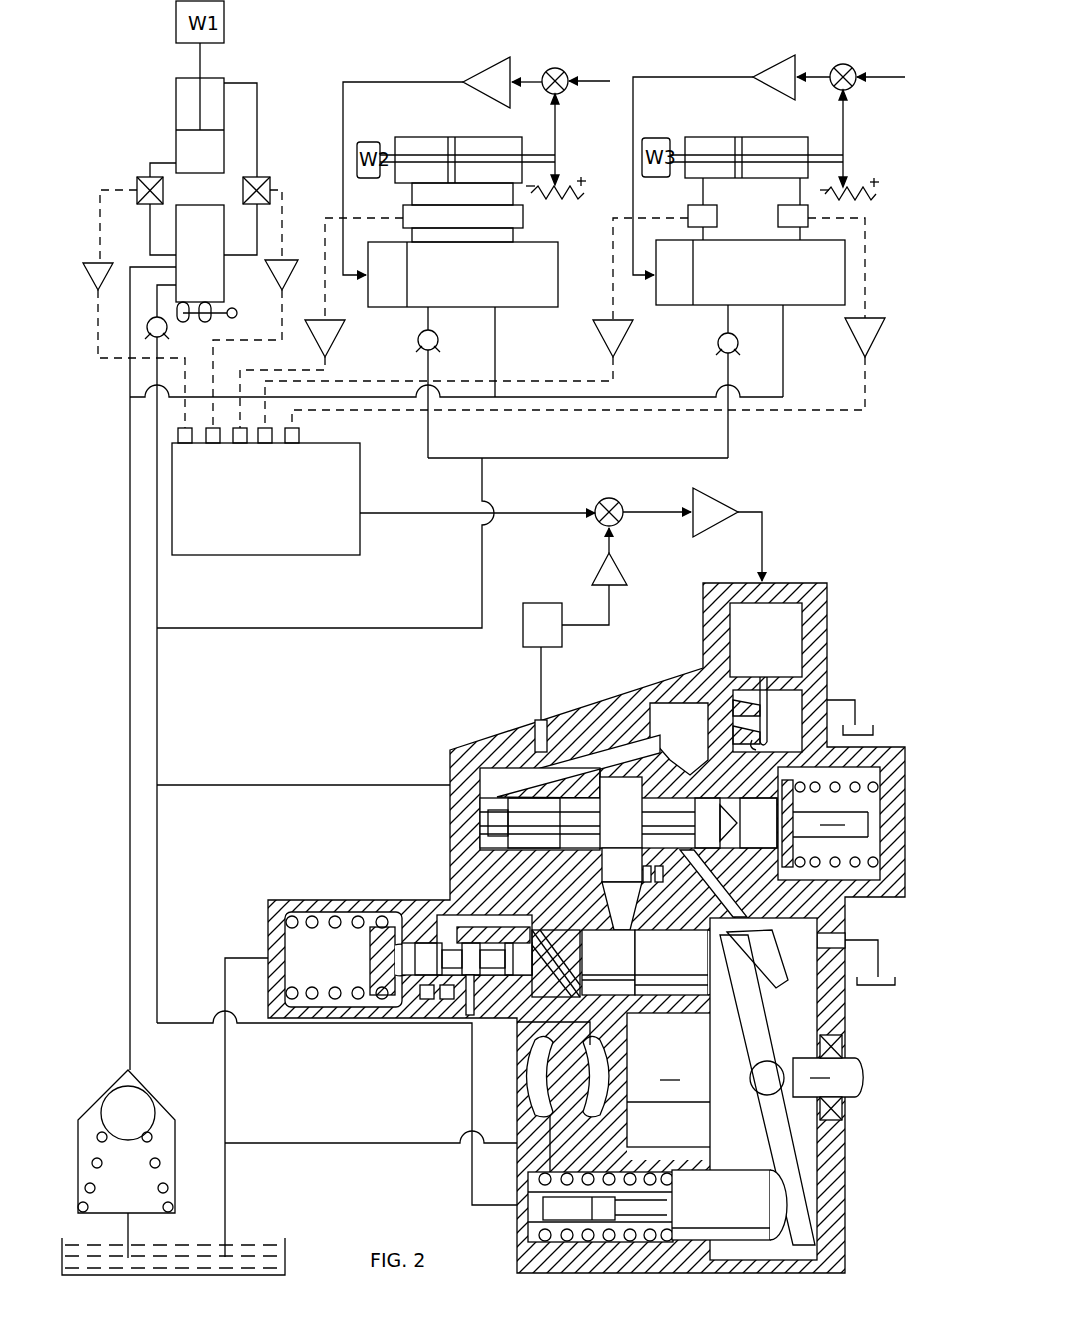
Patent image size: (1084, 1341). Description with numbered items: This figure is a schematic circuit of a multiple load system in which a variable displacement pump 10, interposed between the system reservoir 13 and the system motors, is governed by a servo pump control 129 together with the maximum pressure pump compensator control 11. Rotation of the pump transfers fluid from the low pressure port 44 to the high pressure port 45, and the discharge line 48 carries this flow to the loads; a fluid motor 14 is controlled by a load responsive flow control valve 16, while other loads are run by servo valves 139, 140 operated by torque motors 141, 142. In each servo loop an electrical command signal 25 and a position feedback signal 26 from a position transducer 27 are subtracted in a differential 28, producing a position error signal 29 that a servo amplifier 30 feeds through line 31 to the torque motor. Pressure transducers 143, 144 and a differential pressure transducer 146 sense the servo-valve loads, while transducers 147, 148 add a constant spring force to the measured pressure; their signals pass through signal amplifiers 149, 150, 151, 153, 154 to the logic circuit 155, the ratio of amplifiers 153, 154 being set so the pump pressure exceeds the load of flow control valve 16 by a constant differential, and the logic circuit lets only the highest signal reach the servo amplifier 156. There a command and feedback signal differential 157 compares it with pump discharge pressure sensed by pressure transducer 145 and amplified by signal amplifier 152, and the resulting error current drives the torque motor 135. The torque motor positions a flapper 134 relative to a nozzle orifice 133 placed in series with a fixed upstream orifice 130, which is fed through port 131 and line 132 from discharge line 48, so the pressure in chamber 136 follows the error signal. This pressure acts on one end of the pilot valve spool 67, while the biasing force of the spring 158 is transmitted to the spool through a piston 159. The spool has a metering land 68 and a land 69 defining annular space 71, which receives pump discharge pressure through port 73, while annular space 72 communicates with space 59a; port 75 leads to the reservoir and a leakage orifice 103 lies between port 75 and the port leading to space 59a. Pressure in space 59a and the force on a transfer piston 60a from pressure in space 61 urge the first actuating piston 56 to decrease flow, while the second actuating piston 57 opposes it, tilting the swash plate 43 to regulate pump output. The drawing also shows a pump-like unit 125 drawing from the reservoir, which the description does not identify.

The variable displacement pump 10 is at (836, 1186).
The maximum pressure pump compensator control 11 is at (350, 1010).
The system reservoir 13 is at (874, 728).
The fluid motor 14 is at (176, 108).
The load responsive flow control valve 16 is at (210, 270).
The electrical command signal 25 is at (592, 78).
The position feedback signal 26 is at (558, 140).
The position transducer 27 is at (570, 196).
The differential 28 is at (562, 90).
The position error signal 29 is at (526, 86).
The servo amplifier 30 is at (492, 95).
The line 31 is at (343, 130).
The swash plate 43 is at (778, 1022).
The low pressure port 44 is at (534, 1066).
The high pressure port 45 is at (592, 1088).
The discharge line 48 is at (193, 1022).
The first actuating piston 56 is at (684, 958).
The second actuating piston 57 is at (735, 1202).
The space 59a is at (614, 970).
The transfer piston 60a is at (566, 962).
The space 61 is at (560, 981).
The pilot valve spool 67 is at (525, 830).
The metering land 68 is at (632, 832).
The land 69 is at (716, 833).
The annular space 71 is at (580, 843).
The annular space 72 is at (630, 875).
The port 73 is at (708, 900).
The port 75 is at (612, 906).
The leakage orifice 103 is at (650, 884).
The pump 125 is at (95, 1098).
The servo pump control 129 is at (452, 829).
The fixed upstream orifice 130 is at (585, 745).
The port 131 is at (465, 775).
The line 132 is at (333, 783).
The nozzle orifice 133 is at (768, 742).
The flapper 134 is at (768, 716).
The torque motor 135 is at (776, 655).
The chamber 136 is at (690, 732).
The servo valve 139 is at (480, 287).
The servo valve 140 is at (760, 286).
The torque motor 141 is at (392, 287).
The torque motor 142 is at (680, 286).
The pressure transducer 143 is at (778, 213).
The pressure transducer 144 is at (717, 214).
The pressure transducer 145 is at (549, 636).
The differential pressure transducer 146 is at (470, 226).
The transducer 147 is at (257, 176).
The transducer 148 is at (150, 176).
The signal amplifier 149 is at (877, 330).
The signal amplifier 150 is at (603, 345).
The signal amplifier 151 is at (315, 345).
The signal amplifier 152 is at (615, 574).
The signal amplifier 153 is at (292, 266).
The signal amplifier 154 is at (90, 277).
The logic circuit 155 is at (270, 507).
The servo amplifier 156 is at (712, 504).
The command and feedback signal differential 157 is at (619, 500).
The spring 158 is at (808, 792).
The piston 159 is at (768, 833).